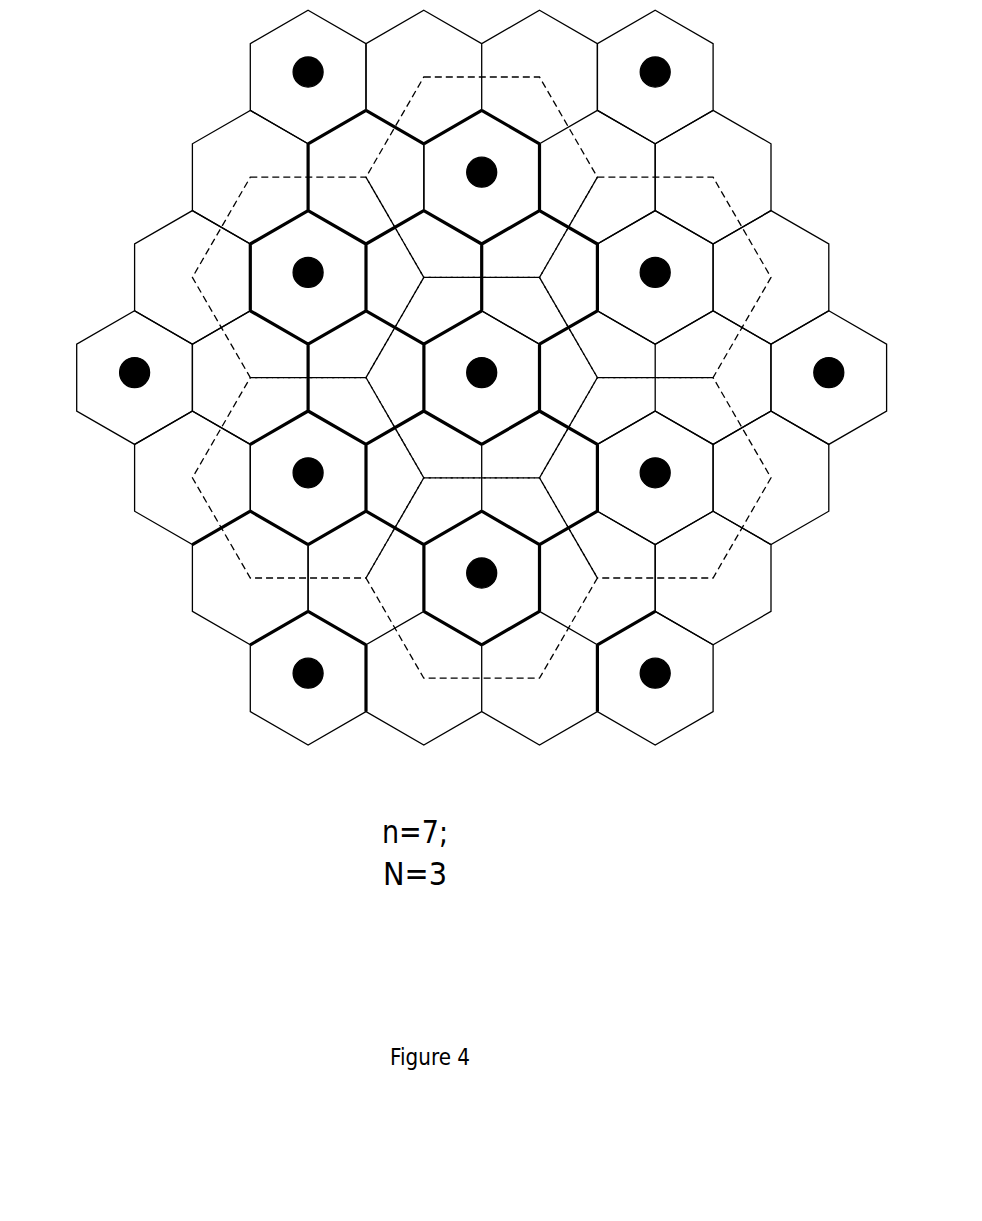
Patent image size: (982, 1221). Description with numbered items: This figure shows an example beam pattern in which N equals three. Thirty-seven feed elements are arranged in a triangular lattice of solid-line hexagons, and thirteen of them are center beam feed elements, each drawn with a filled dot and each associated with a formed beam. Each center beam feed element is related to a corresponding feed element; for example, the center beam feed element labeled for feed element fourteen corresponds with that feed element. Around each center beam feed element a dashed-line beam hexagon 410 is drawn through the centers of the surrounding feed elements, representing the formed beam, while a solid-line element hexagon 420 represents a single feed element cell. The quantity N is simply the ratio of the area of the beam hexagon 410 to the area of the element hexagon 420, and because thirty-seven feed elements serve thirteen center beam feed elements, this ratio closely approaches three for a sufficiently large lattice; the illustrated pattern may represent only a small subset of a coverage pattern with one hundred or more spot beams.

The beam hexagon 410 is at (553, 667).
The element hexagon 420 is at (498, 638).